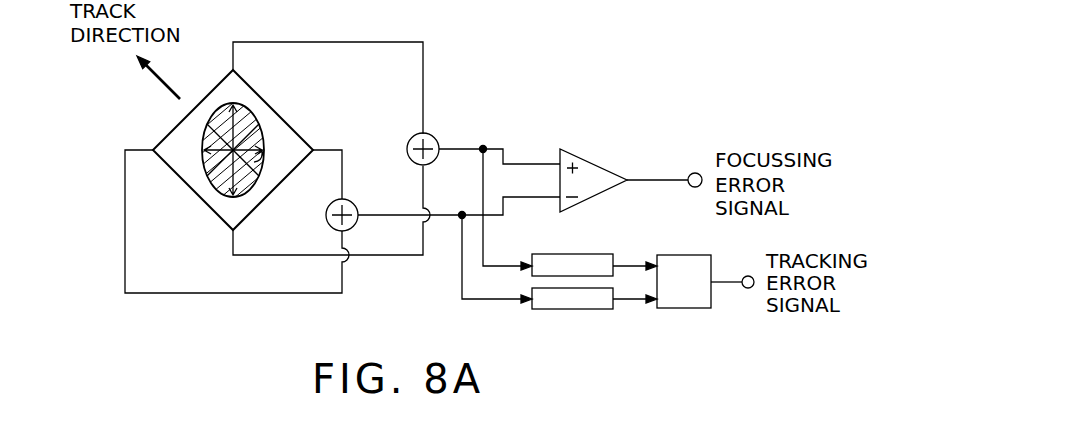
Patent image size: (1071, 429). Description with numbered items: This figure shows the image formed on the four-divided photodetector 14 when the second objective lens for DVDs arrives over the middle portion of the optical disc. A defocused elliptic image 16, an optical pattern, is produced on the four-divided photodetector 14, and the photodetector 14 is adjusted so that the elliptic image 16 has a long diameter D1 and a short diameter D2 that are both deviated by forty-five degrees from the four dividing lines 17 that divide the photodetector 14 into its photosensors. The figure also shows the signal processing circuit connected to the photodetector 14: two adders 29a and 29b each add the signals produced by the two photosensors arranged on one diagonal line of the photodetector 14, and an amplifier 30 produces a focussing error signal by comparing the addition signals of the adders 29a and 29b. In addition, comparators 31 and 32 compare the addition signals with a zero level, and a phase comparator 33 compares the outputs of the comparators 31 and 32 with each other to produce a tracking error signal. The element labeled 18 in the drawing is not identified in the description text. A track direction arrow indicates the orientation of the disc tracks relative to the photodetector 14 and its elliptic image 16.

The four-divided photodetector 14 is at (178, 125).
The defocused elliptic image 16 is at (193, 168).
The dividing lines 17 is at (207, 192).
The beam spot 18 is at (264, 141).
The long diameter D1 is at (258, 105).
The short diameter D2 is at (261, 167).
The adder 29a is at (353, 204).
The adder 29b is at (437, 134).
The amplifier 30 is at (592, 158).
The comparator 31 is at (563, 254).
The comparator 32 is at (570, 310).
The phase comparator 33 is at (685, 309).